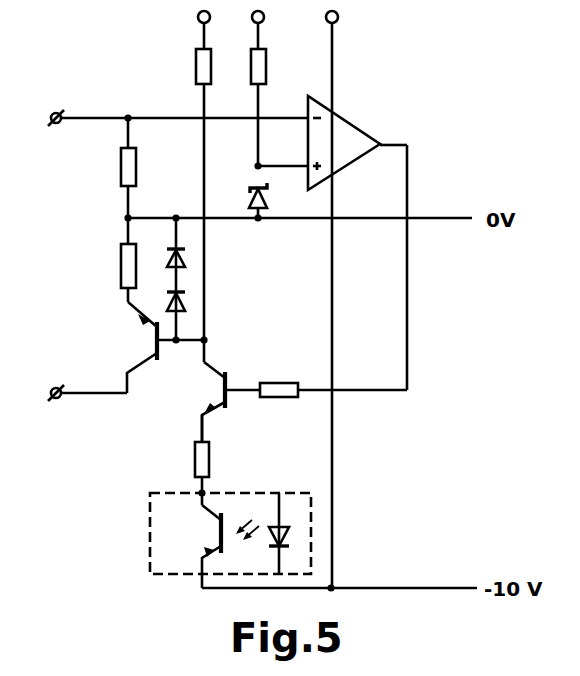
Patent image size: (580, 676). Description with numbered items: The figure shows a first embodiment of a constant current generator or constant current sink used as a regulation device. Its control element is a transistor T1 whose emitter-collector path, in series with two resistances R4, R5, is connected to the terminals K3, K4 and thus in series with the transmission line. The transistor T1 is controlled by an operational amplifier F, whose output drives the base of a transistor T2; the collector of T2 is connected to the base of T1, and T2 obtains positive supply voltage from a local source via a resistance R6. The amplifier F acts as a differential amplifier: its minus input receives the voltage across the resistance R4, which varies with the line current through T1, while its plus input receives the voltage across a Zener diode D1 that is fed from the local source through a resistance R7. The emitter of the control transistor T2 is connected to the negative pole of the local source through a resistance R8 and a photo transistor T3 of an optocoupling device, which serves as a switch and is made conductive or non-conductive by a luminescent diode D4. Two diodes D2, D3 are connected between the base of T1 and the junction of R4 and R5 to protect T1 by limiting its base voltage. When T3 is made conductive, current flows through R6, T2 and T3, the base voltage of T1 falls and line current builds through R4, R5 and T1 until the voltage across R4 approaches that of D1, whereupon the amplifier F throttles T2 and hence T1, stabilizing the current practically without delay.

The terminal K3 is at (55, 113).
The terminal K4 is at (55, 388).
The resistance R4 is at (136, 182).
The resistance R5 is at (136, 279).
The resistance R6 is at (211, 82).
The resistance R7 is at (266, 82).
The resistance R8 is at (209, 474).
The Zener diode D1 is at (249, 192).
The diode D2 is at (186, 259).
The diode D3 is at (186, 306).
The luminescent diode D4 is at (283, 529).
The transistor T1 is at (159, 356).
The transistor T2 is at (226, 381).
The photo transistor T3 is at (218, 531).
The operational amplifier F is at (344, 143).